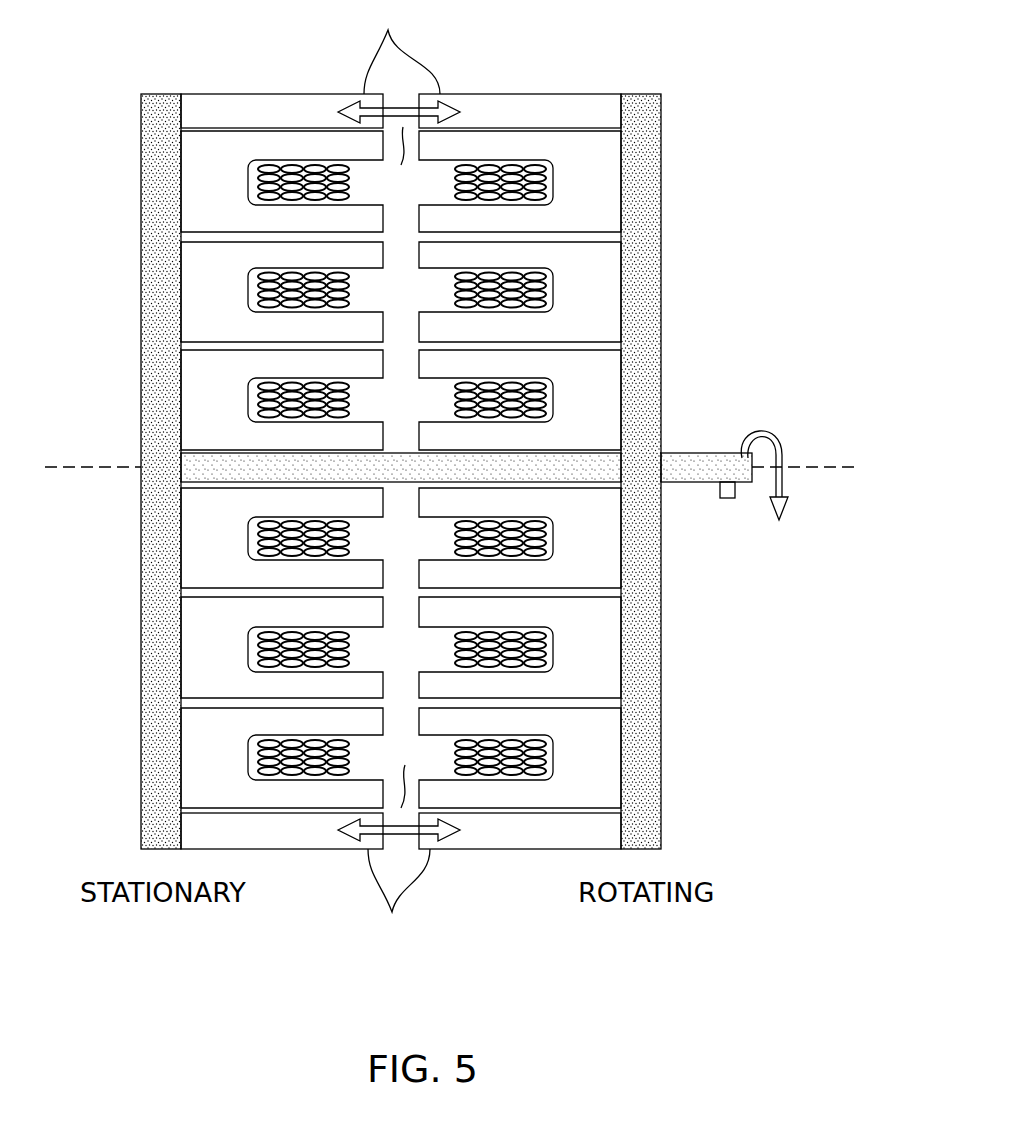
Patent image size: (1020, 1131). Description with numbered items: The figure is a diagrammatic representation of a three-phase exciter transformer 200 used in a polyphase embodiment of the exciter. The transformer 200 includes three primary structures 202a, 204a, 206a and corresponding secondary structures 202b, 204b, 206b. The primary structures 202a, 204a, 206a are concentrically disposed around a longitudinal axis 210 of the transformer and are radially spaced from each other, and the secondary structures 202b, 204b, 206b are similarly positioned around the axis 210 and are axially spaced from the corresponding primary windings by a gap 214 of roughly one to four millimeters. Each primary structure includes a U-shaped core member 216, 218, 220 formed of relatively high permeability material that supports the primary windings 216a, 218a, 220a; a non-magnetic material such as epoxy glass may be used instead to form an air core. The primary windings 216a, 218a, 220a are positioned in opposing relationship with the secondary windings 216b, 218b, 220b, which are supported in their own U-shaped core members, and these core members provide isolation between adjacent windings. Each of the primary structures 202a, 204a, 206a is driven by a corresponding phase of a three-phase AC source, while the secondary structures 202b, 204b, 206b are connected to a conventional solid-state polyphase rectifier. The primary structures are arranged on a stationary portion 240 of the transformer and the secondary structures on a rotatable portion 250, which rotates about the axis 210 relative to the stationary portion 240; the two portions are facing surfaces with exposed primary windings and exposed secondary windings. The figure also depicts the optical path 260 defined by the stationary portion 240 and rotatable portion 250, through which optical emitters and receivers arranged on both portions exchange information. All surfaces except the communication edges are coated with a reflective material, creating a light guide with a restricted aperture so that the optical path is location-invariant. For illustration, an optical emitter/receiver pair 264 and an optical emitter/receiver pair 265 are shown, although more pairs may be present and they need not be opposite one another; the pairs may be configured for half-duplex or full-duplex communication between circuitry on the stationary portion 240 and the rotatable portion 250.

The three-phase exciter transformer 200 is at (798, 197).
The longitudinal axis 210 is at (832, 470).
The gap 214 is at (423, 301).
The U-shaped core member 216 is at (238, 228).
The U-shaped core member 218 is at (238, 338).
The U-shaped core member 220 is at (238, 446).
The primary structure 202a is at (200, 190).
The secondary structure 202b is at (595, 190).
The primary structure 204a is at (200, 300).
The secondary structure 204b is at (595, 298).
The primary structure 206a is at (200, 408).
The secondary structure 206b is at (595, 408).
The primary winding 216a is at (250, 182).
The secondary winding 216b is at (553, 178).
The primary winding 218a is at (250, 290).
The secondary winding 218b is at (553, 288).
The primary winding 220a is at (250, 400).
The secondary winding 220b is at (553, 397).
The stationary portion 240 is at (165, 849).
The rotatable portion 250 is at (650, 849).
The optical path 260 is at (402, 467).
The optical emitter/receiver pair 264 is at (399, 883).
The optical emitter/receiver pair 265 is at (399, 63).